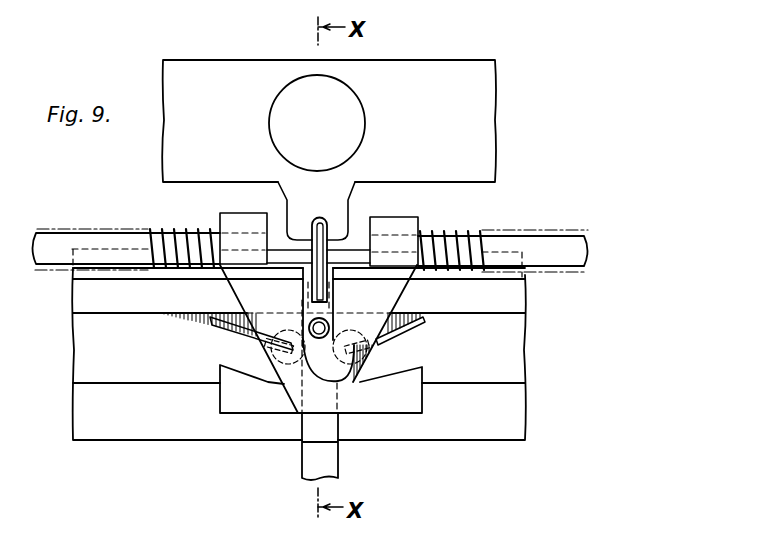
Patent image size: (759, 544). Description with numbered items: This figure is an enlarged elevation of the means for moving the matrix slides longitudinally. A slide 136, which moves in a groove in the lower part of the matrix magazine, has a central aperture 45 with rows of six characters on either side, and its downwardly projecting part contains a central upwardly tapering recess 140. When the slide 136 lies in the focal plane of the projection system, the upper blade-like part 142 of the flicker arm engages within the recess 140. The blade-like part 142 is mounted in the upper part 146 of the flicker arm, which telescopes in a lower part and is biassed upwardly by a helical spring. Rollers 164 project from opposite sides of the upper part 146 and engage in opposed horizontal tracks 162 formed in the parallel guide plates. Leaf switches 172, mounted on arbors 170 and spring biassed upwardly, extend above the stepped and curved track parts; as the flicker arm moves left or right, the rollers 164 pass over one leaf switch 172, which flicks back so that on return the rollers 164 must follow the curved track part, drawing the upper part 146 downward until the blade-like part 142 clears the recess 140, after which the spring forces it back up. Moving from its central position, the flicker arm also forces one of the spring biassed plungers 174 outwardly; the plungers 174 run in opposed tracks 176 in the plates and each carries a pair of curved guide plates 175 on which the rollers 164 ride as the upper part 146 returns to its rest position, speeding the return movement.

The slide 136 is at (437, 68).
The central aperture 45 is at (355, 95).
The blade-like part 142 is at (288, 220).
The recess 140 is at (347, 222).
The tracks 176 is at (87, 274).
The plungers 174 is at (222, 222).
The tracks 162 is at (134, 363).
The rollers 164 is at (333, 318).
The arbors 170 is at (270, 354).
The leaf switches 172 is at (216, 326).
The curved guide plates 175 is at (227, 399).
The upper part 146 is at (338, 423).